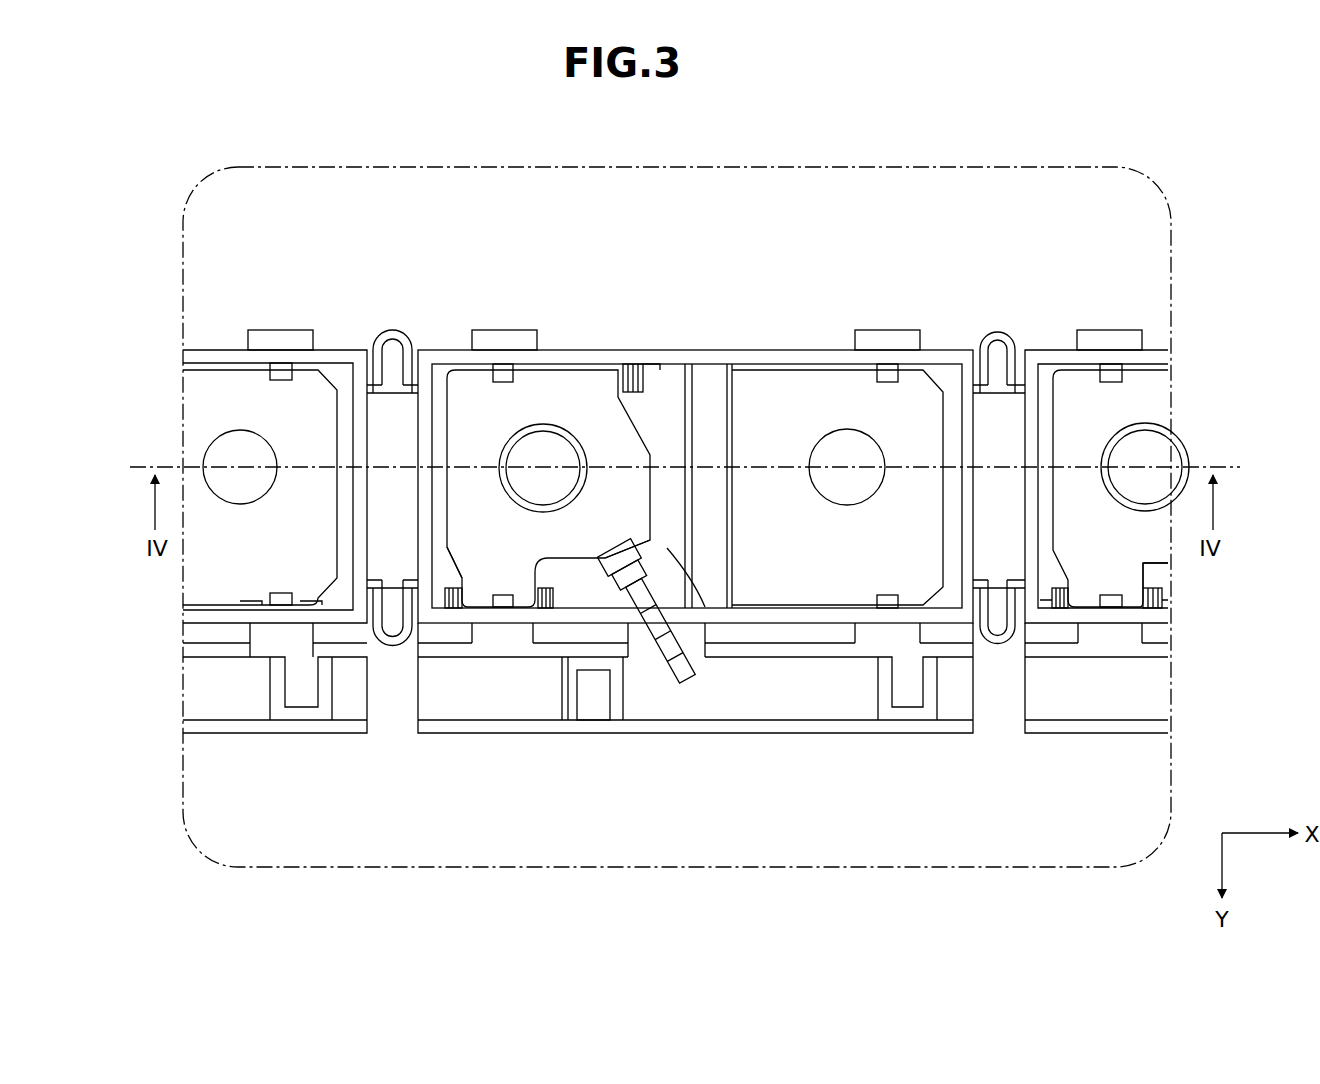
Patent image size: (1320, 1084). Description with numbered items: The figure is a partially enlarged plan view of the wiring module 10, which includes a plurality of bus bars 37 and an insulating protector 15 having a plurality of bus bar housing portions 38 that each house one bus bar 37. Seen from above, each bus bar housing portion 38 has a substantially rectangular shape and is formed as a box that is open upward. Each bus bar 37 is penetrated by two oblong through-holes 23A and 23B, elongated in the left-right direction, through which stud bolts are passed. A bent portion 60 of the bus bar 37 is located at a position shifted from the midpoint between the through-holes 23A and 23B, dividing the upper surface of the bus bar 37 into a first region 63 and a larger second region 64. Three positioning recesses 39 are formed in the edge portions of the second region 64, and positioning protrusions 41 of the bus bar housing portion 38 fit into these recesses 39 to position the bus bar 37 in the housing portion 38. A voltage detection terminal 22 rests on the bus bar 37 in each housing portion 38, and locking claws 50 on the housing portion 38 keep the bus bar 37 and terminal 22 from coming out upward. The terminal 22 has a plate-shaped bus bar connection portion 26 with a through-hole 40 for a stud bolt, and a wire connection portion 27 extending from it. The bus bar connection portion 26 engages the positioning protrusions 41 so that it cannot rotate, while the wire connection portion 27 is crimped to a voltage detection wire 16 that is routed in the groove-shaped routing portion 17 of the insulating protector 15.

The wiring module 10 is at (232, 197).
The insulating protector 15 is at (205, 352).
The voltage detection wire 16 is at (678, 660).
The routing portion 17 is at (203, 707).
The voltage detection terminal 22 is at (1152, 365).
The through-hole 23A is at (505, 455).
The through-hole 23B is at (245, 437).
The bus bar connection portion 26 is at (567, 548).
The wire connection portion 27 is at (620, 560).
The bus bar 37 is at (203, 403).
The bus bar housing portion 38 is at (230, 578).
The positioning recess 39 is at (648, 365).
The through-hole 40 is at (560, 448).
The positioning protrusion 41 is at (632, 372).
The locking claw 50 is at (279, 372).
The bent portion 60 is at (708, 385).
The first region 63 is at (232, 612).
The second region 64 is at (667, 548).